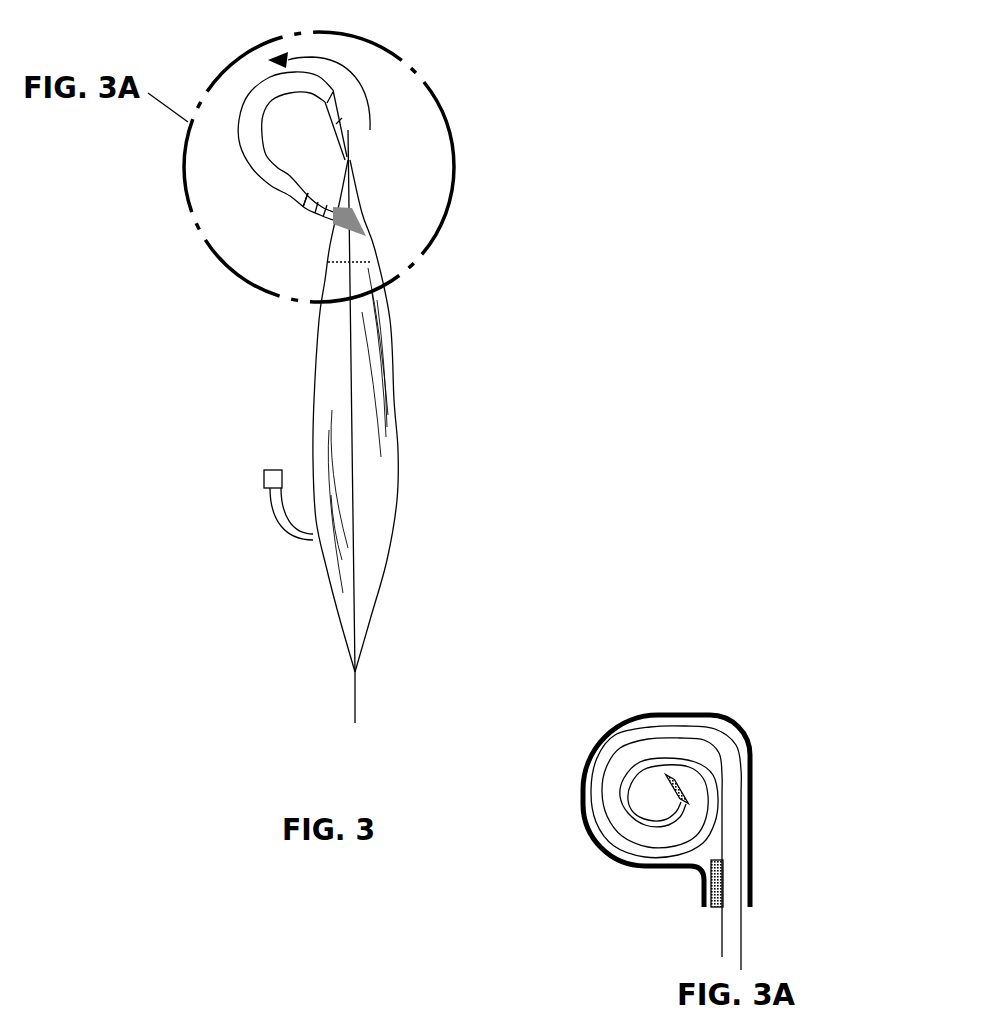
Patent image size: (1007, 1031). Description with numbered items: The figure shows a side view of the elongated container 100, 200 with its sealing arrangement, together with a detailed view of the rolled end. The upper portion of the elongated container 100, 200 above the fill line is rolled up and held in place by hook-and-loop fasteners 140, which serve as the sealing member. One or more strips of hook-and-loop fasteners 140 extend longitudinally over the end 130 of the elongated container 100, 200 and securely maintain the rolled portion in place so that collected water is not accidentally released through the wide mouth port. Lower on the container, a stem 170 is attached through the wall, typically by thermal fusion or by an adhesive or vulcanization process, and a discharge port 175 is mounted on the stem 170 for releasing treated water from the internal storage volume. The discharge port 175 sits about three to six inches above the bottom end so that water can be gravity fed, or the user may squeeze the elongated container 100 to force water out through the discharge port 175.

In FIG. 3, the elongated container 100 is at (440, 397).
In FIG. 3, the elongated container 200 is at (397, 436).
In FIG. 3, the end 130 is at (317, 215).
In FIG. 3A, the end 130 is at (686, 806).
In FIG. 3, the hook-and-loop fasteners 140 is at (350, 220).
In FIG. 3A, the hook-and-loop fasteners 140 is at (752, 748).
In FIG. 3, the stem 170 is at (290, 538).
In FIG. 3, the discharge port 175 is at (276, 479).